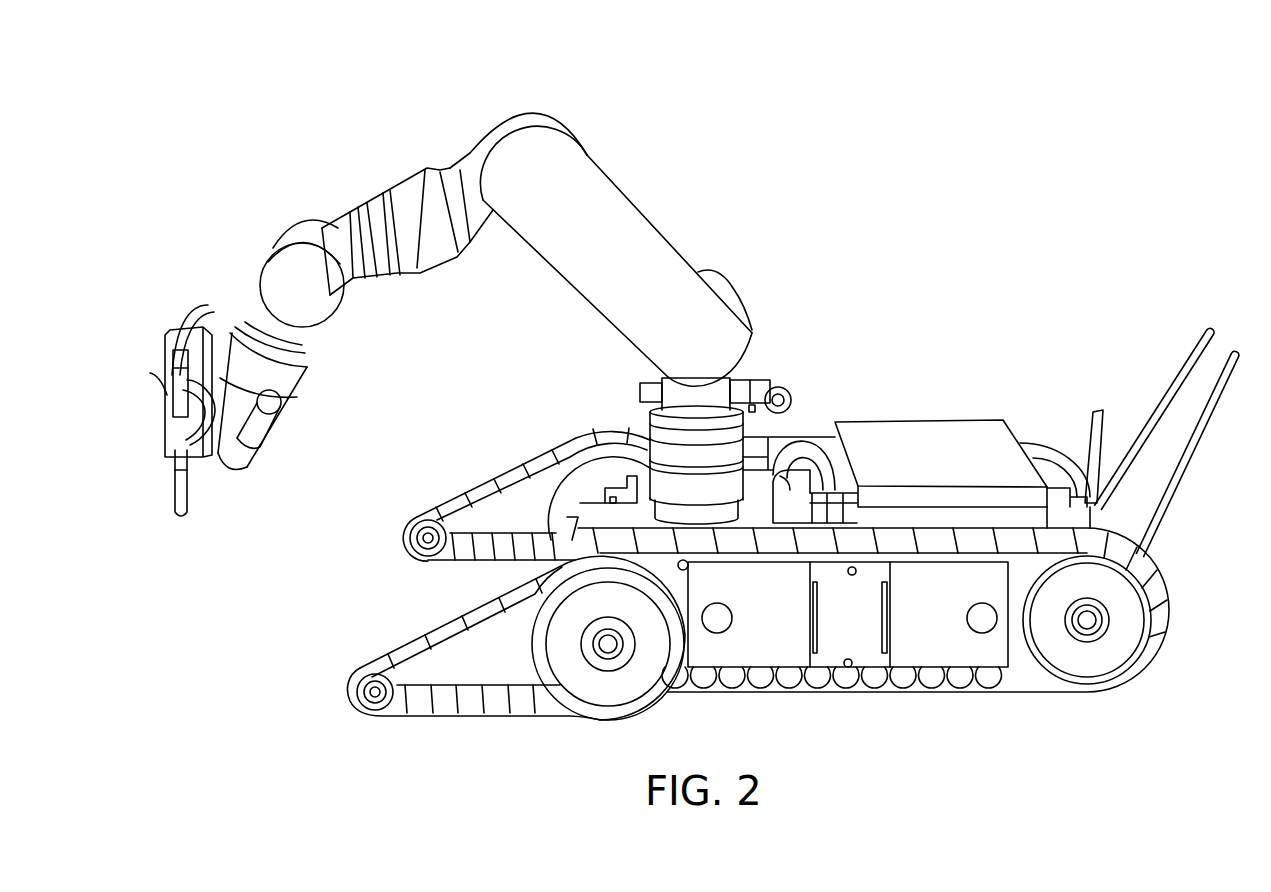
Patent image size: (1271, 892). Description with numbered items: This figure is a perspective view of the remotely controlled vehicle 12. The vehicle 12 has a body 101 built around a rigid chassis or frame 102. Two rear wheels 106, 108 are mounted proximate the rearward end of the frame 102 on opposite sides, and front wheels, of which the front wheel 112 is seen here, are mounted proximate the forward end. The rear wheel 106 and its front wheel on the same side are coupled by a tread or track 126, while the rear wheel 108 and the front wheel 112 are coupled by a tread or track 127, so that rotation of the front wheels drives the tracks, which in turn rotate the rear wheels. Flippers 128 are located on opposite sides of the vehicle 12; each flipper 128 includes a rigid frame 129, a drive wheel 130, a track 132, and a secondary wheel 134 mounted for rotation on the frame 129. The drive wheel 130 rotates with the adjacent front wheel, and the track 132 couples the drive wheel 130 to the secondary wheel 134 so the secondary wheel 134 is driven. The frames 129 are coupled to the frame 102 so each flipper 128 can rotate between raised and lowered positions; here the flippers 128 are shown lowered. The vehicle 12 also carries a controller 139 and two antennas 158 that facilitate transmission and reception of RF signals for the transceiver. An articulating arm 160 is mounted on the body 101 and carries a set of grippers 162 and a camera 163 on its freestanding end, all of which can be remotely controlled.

The vehicle 12 is at (954, 118).
The body 101 is at (821, 412).
The rigid chassis or frame 102 is at (918, 645).
The rear wheel 106 is at (1000, 627).
The rear wheel 108 is at (1055, 470).
The front wheel 112 is at (578, 468).
The tread or track 126 is at (760, 678).
The tread or track 127 is at (1057, 468).
The flipper 128 is at (381, 619).
The rigid frame 129 is at (495, 522).
The drive wheel 130 is at (562, 690).
The track 132 is at (520, 460).
The secondary wheel 134 is at (412, 540).
The controller 139 is at (925, 440).
The antennas 158 is at (1212, 387).
The articulating arm 160 is at (652, 180).
The grippers 162 is at (175, 490).
The camera 163 is at (163, 384).